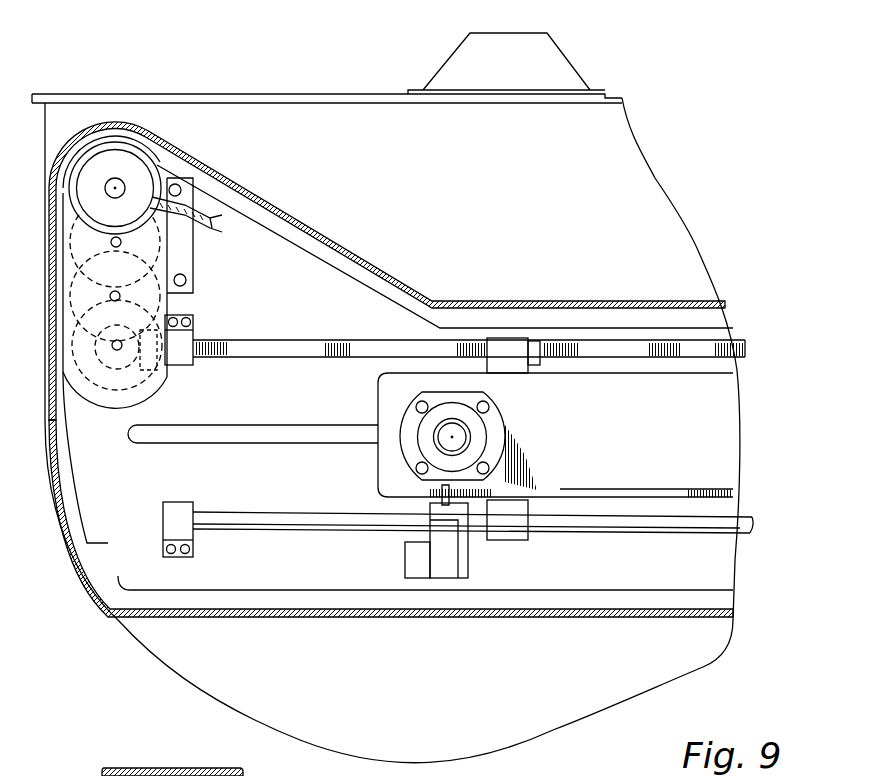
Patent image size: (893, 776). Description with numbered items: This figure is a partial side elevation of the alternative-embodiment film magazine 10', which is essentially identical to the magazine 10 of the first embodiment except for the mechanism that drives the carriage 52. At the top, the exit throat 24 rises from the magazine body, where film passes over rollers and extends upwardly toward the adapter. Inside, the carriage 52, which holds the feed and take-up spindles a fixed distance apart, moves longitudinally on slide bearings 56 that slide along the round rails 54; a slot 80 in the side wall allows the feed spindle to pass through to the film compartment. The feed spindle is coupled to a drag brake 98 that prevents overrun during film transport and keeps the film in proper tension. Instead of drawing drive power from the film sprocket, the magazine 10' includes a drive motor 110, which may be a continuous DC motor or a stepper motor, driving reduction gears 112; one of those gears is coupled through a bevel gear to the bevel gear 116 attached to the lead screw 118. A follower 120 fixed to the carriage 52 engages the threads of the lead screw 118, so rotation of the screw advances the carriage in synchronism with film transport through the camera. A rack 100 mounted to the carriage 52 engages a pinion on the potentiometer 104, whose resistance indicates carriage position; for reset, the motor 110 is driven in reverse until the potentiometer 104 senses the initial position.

The film magazine 10 is at (138, 314).
The magazine 10' is at (386, 428).
The exit throat 24 is at (460, 58).
The carriage 52 is at (387, 467).
The rails 54 is at (317, 522).
The slide bearings 56 is at (524, 538).
The slot 80 is at (236, 437).
The drag brake 98 is at (483, 430).
The rack 100 is at (583, 494).
The potentiometer 104 is at (443, 565).
The drive motor 110 is at (142, 172).
The reduction gears 112 is at (165, 241).
The bevel gear 116 is at (158, 389).
The lead screw 118 is at (284, 346).
The follower 120 is at (508, 345).